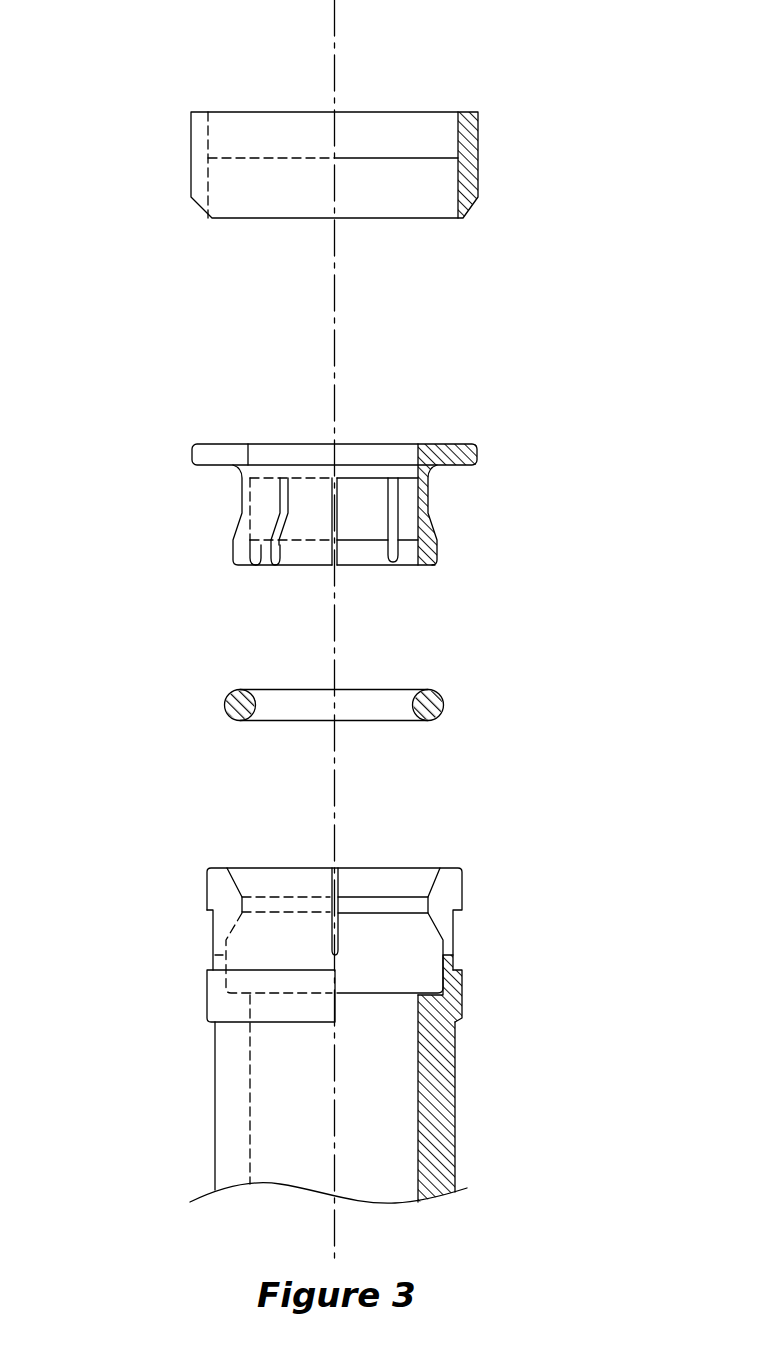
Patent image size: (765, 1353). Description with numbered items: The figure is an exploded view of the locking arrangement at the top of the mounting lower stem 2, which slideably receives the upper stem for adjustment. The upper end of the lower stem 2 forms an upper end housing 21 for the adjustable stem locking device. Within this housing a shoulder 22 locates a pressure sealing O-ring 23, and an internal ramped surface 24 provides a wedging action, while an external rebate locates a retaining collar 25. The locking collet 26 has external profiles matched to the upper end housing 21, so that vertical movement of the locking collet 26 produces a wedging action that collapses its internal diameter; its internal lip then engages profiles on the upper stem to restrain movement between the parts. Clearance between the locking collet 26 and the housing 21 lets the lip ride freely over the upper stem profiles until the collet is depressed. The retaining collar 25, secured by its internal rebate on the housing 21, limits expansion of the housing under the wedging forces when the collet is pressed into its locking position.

The mounting lower stem 2 is at (227, 1132).
The upper end housing 21 is at (213, 943).
The shoulder 22 is at (240, 983).
The pressure sealing O-ring 23 is at (226, 703).
The internal ramped surface 24 is at (242, 897).
The retaining collar 25 is at (208, 165).
The locking collet 26 is at (232, 532).